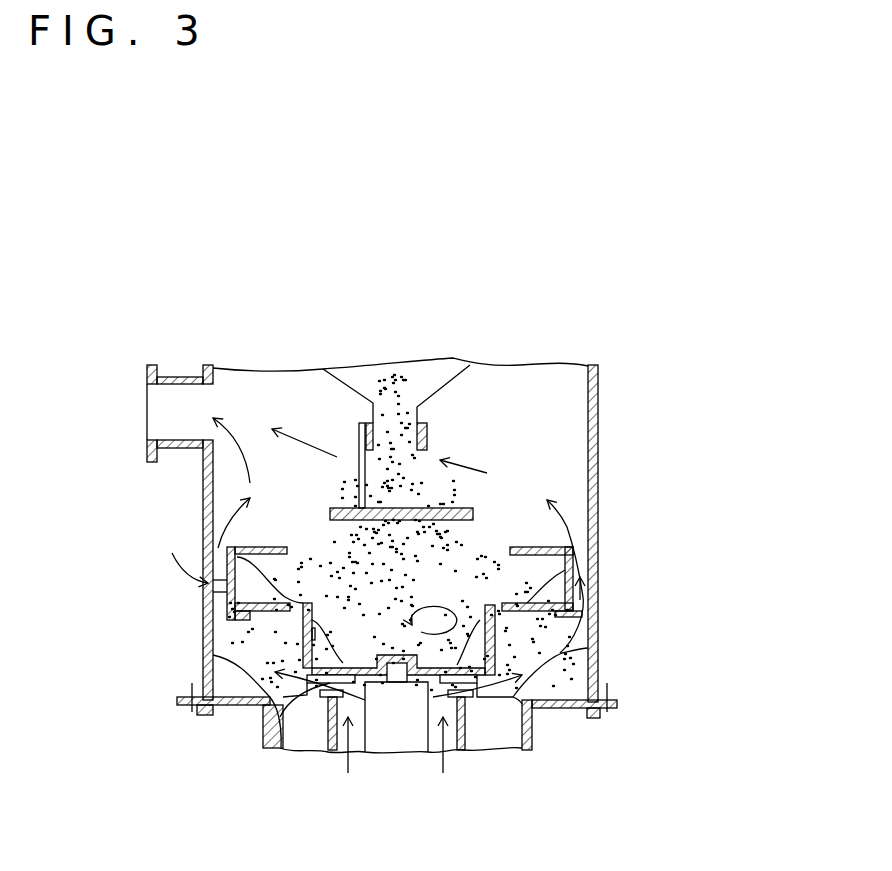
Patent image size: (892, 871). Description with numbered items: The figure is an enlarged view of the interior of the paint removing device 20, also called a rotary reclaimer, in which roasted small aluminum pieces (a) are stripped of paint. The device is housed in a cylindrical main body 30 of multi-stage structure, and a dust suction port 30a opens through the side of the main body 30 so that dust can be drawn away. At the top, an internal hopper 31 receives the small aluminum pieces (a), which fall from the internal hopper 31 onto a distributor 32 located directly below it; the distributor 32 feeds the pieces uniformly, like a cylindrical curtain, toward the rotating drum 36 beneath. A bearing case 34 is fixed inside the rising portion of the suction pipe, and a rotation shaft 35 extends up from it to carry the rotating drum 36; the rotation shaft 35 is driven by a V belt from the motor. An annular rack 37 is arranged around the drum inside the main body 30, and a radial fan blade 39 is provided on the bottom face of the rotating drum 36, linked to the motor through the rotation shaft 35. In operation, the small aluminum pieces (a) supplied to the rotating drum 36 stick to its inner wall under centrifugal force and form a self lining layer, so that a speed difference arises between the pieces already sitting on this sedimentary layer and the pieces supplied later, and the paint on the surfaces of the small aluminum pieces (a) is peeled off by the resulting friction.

The paint removing device 20 is at (505, 277).
The cylindrical main body 30 is at (598, 393).
The dust suction port 30a is at (167, 403).
The internal hopper 31 is at (440, 393).
The distributor 32 is at (453, 508).
The bearing case 34 is at (383, 743).
The rotation shaft 35 is at (397, 677).
The rotating drum 36 is at (270, 716).
The annular rack 37 is at (598, 553).
The radial fan blade 39 is at (532, 728).
The small aluminum pieces a is at (385, 390).